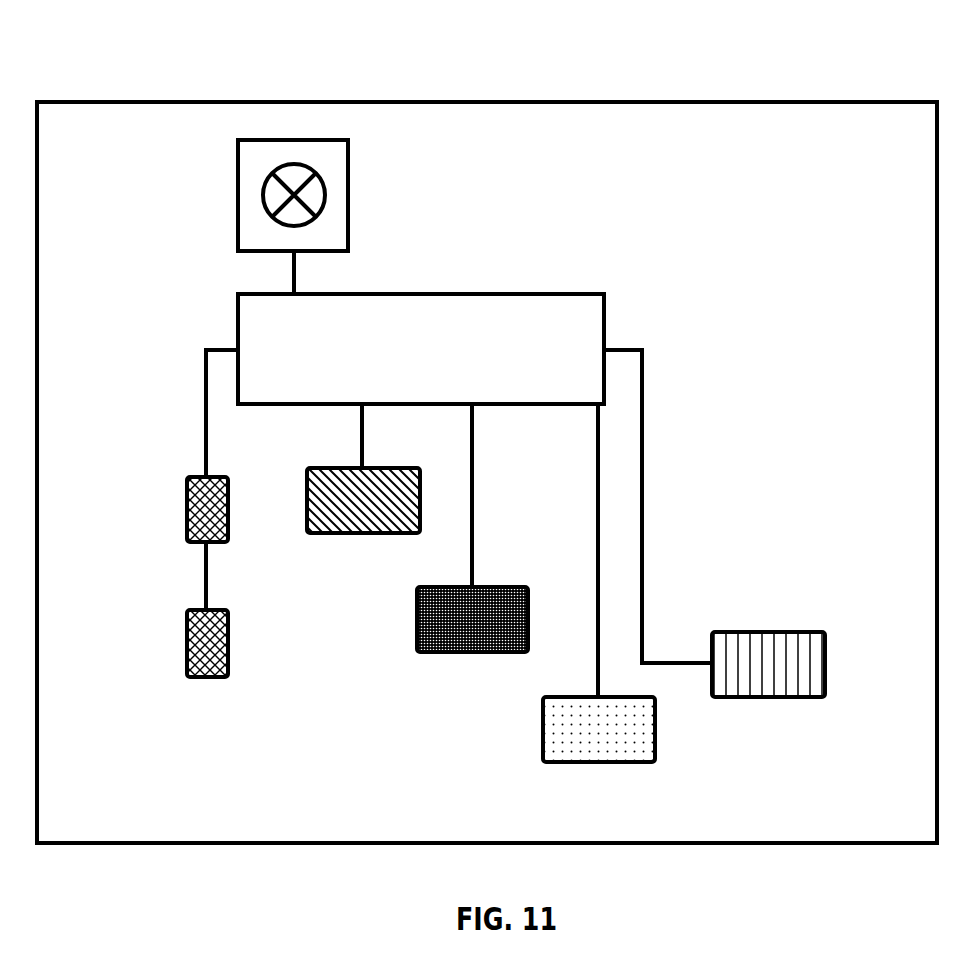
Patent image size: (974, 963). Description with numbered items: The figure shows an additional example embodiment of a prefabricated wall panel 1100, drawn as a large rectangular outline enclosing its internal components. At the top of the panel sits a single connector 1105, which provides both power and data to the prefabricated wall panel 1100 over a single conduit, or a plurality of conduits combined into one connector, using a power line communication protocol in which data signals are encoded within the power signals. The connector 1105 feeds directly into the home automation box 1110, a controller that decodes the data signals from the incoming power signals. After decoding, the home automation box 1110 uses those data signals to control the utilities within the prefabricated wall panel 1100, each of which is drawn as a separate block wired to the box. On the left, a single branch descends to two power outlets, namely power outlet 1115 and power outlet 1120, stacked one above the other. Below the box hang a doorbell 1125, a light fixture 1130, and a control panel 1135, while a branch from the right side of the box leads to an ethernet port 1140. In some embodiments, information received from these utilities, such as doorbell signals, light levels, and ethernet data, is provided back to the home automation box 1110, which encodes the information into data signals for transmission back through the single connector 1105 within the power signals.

The prefabricated wall panel 1100 is at (403, 66).
The single connector 1105 is at (262, 193).
The home automation box 1110 is at (238, 306).
The power outlet 1115 is at (187, 500).
The power outlet 1120 is at (187, 640).
The doorbell 1125 is at (362, 533).
The light fixture 1130 is at (472, 652).
The control panel 1135 is at (598, 762).
The ethernet port 1140 is at (768, 697).